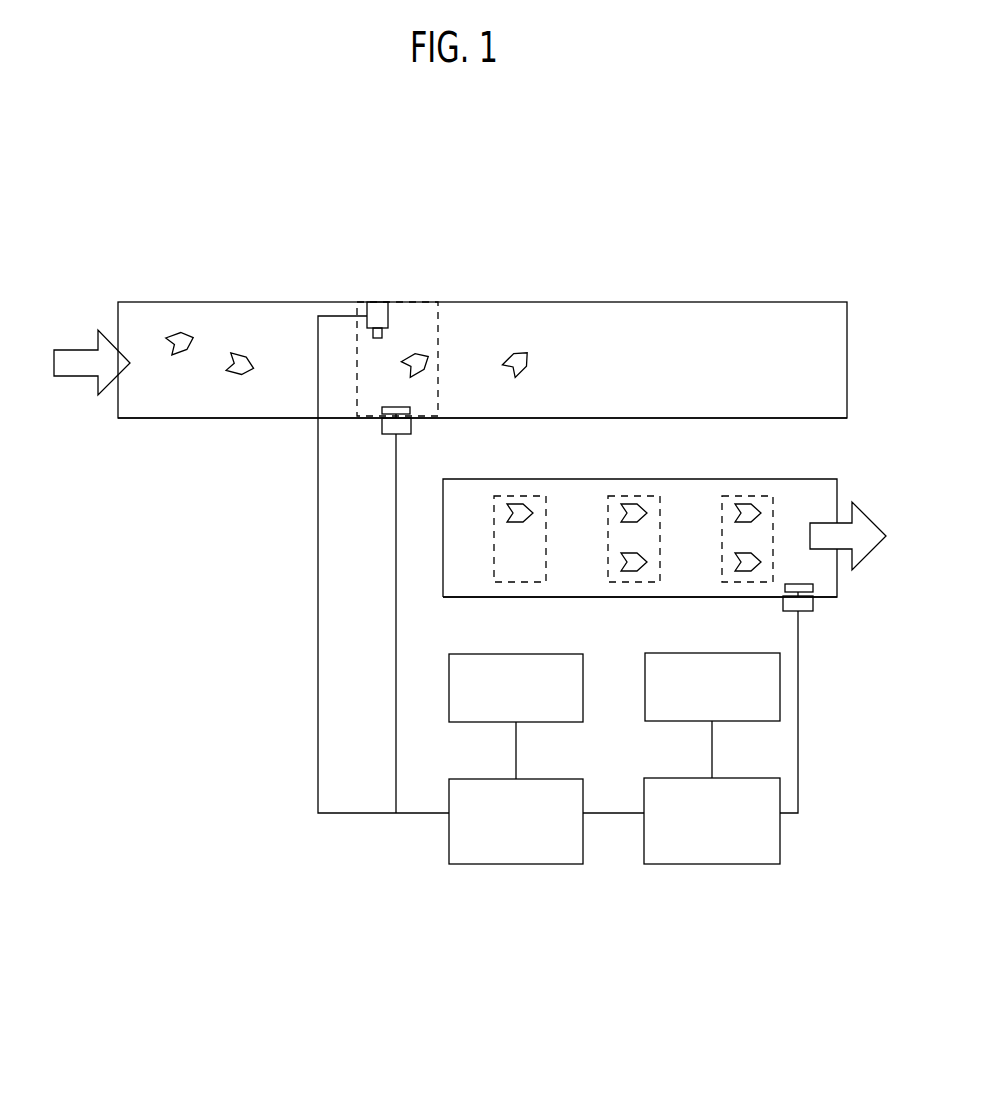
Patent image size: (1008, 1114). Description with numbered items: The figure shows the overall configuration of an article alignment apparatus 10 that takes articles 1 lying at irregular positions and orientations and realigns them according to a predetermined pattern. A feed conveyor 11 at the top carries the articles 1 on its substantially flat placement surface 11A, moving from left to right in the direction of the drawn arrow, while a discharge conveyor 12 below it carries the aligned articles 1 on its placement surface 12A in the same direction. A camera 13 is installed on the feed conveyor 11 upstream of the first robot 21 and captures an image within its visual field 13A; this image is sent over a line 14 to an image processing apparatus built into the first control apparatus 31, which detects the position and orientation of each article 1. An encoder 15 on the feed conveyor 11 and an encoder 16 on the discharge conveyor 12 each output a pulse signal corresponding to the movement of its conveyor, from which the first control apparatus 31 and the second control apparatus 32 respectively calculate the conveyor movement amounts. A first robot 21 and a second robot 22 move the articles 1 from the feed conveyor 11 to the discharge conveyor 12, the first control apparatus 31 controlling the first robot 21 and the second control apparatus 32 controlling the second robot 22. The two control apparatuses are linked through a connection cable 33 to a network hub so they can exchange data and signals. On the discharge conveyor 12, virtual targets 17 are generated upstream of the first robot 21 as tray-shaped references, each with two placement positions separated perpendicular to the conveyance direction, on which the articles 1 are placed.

The article alignment apparatus 10 is at (80, 240).
The feed conveyor 11 is at (156, 302).
The placement surface 11A is at (227, 418).
The article 1 is at (241, 355).
The camera 13 is at (378, 302).
The visual field 13A is at (438, 320).
The line 14 is at (318, 612).
The encoder 15 is at (383, 426).
The encoder 16 is at (815, 603).
The virtual target 17 is at (508, 495).
The discharge conveyor 12 is at (805, 479).
The placement surface 12A is at (568, 585).
The first robot 21 is at (570, 722).
The second robot 22 is at (745, 721).
The first control apparatus 31 is at (543, 864).
The second control apparatus 32 is at (745, 864).
The connection cable 33 is at (603, 813).